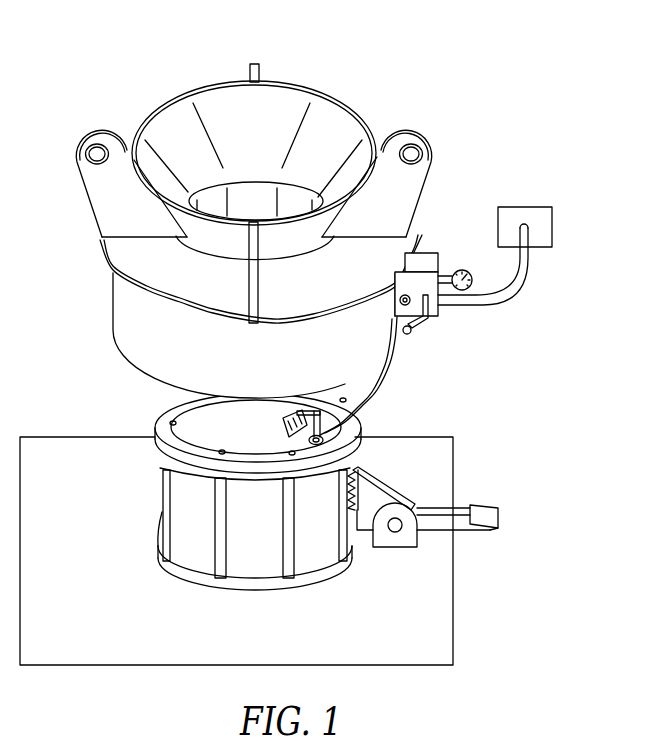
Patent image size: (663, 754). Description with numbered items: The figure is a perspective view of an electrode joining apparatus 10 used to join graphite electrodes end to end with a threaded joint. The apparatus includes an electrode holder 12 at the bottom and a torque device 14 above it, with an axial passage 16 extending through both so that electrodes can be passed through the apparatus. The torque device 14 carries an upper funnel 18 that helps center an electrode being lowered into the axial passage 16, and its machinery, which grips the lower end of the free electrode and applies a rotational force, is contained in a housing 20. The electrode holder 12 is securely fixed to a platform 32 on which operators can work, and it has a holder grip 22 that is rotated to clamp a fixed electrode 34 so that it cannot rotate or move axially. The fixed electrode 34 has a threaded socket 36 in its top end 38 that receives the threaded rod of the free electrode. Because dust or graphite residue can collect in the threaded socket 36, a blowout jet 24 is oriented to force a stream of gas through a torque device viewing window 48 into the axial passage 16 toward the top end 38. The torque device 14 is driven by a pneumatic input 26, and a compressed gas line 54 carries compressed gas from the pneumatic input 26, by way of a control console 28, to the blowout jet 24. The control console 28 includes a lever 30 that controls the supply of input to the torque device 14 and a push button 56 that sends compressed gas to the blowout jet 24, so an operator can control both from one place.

The electrode joining apparatus 10 is at (474, 52).
The electrode holder 12 is at (190, 562).
The torque device 14 is at (122, 308).
The axial passage 16 is at (255, 197).
The upper funnel 18 is at (205, 90).
The housing 20 is at (132, 341).
The holder grip 22 is at (377, 477).
The blowout jet 24 is at (353, 433).
The pneumatic input 26 is at (548, 221).
The control console 28 is at (426, 258).
The lever 30 is at (420, 327).
The platform 32 is at (444, 642).
The fixed electrode 34 is at (313, 417).
The threaded socket 36 is at (307, 407).
The top end 38 is at (317, 427).
The torque device viewing window 48 is at (282, 433).
The compressed gas line 54 is at (397, 358).
The push button 56 is at (440, 262).